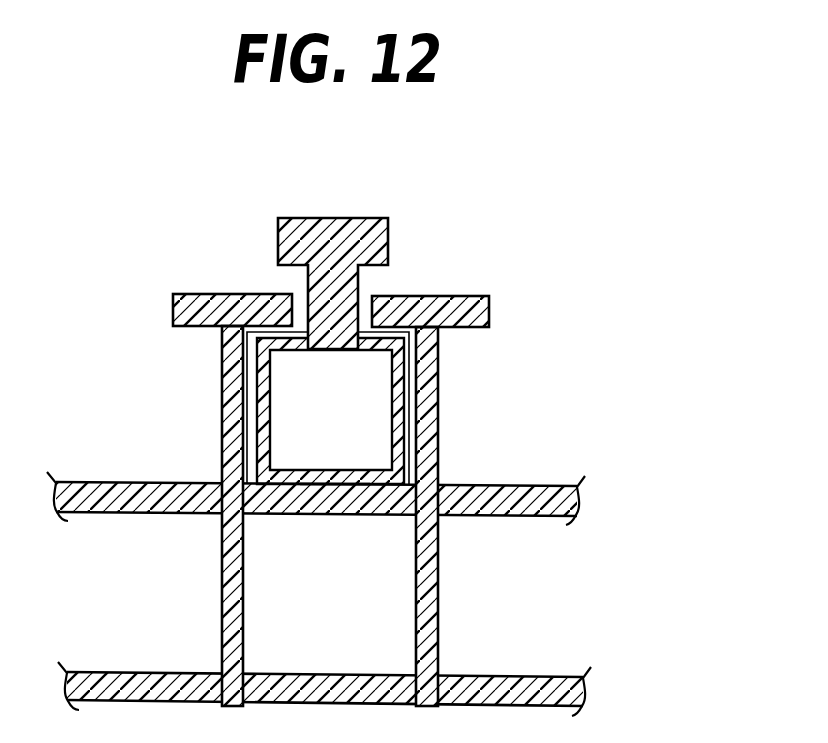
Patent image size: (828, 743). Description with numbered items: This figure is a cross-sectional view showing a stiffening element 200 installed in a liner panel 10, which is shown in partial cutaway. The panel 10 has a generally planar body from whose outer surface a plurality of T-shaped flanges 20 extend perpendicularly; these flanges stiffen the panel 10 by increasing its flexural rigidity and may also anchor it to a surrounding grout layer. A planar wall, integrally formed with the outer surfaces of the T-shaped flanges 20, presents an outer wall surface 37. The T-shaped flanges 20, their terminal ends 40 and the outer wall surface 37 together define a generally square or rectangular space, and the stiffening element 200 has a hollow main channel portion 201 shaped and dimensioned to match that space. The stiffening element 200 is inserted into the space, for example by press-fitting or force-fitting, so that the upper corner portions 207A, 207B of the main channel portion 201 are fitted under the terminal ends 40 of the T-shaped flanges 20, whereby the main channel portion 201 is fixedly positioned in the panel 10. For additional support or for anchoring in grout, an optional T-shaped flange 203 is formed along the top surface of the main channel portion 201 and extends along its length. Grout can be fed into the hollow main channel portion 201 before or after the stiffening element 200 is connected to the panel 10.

The panel 10 is at (606, 458).
The T-shaped flanges 20 is at (223, 470).
The outer wall surface 37 is at (339, 494).
The terminal ends 40 is at (173, 316).
The stiffening element 200 is at (196, 228).
The main channel portion 201 is at (397, 402).
The T-shaped flange 203 is at (324, 217).
The upper corner portion 207A is at (270, 330).
The upper corner portion 207B is at (382, 327).